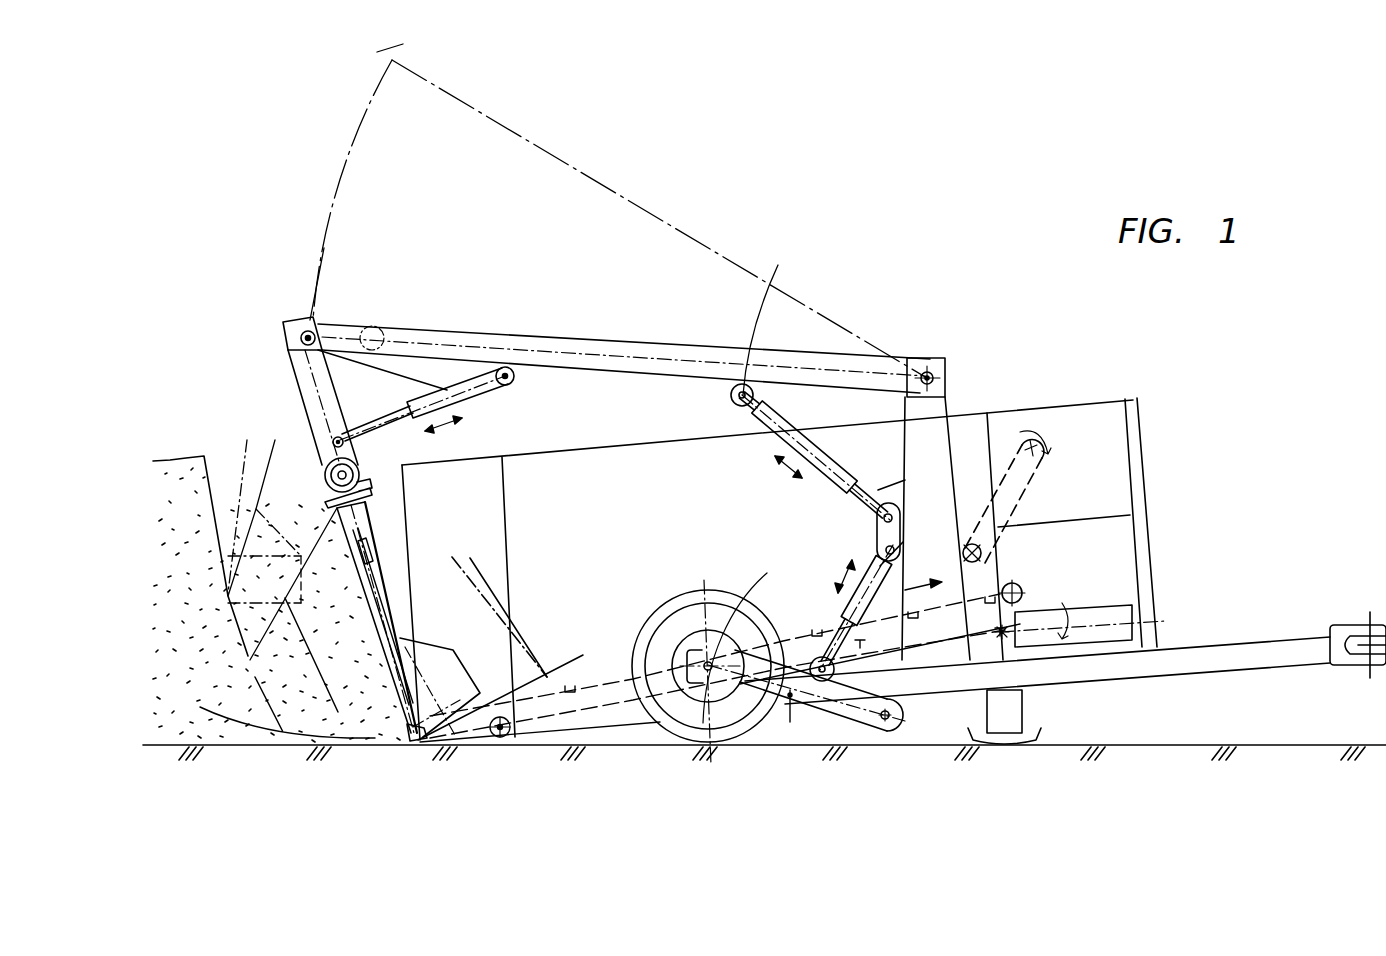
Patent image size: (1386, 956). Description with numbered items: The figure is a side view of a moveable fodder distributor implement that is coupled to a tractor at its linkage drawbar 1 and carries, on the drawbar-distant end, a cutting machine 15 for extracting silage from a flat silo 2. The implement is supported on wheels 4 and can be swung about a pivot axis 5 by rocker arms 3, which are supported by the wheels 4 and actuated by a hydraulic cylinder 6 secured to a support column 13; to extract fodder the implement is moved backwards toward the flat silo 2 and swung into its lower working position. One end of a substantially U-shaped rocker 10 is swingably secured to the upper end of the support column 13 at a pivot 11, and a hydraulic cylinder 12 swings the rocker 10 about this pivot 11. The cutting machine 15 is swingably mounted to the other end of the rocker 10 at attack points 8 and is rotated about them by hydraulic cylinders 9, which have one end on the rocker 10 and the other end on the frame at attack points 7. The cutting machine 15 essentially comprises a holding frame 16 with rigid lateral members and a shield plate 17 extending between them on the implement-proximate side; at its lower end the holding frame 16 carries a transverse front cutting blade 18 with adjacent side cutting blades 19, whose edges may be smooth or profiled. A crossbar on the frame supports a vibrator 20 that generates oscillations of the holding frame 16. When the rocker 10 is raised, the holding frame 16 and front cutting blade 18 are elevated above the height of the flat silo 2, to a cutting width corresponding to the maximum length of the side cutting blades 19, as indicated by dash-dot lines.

The linkage drawbar 1 is at (1363, 643).
The flat silo 2 is at (170, 698).
The rocker arms 3 is at (803, 700).
The wheels 4 is at (662, 726).
The pivot axis 5 is at (887, 722).
The hydraulic cylinder 6 is at (858, 698).
The attack points 7 is at (334, 440).
The attack points 8 is at (287, 322).
The hydraulic cylinders 9 is at (287, 347).
The rocker 10 is at (795, 362).
The pivot 11 is at (927, 380).
The hydraulic cylinder 12 is at (838, 450).
The support column 13 is at (935, 438).
The silage cutting machine 15 is at (360, 605).
The holding frame 16 is at (370, 528).
The shield plate 17 is at (410, 580).
The front cutting blade 18 is at (410, 726).
The side cutting blades 19 is at (454, 692).
The vibrator 20 is at (325, 467).